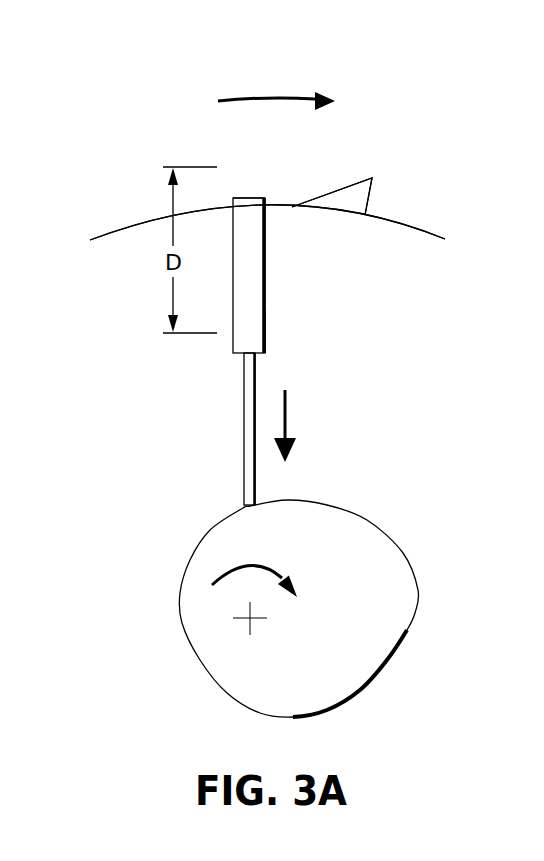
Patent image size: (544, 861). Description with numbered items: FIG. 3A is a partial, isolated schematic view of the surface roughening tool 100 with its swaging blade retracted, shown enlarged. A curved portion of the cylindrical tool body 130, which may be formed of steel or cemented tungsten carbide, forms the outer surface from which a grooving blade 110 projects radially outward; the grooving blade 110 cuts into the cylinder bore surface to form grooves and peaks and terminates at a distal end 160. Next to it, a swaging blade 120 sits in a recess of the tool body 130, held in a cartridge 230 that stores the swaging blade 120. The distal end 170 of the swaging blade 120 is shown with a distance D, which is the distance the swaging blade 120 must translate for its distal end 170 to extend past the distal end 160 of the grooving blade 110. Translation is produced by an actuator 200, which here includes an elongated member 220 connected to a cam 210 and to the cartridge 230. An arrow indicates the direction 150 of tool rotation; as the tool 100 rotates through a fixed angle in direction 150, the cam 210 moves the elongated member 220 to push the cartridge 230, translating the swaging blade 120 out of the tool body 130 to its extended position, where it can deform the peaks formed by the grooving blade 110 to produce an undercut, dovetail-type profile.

The surface roughening tool 100 is at (146, 65).
The grooving blade 110 is at (369, 198).
The swaging blade 120 is at (265, 290).
The tool body 130 is at (127, 227).
The direction 150 is at (296, 96).
The distal end of the grooving blade 160 is at (373, 179).
The distal end of the swaging blade 170 is at (257, 197).
The actuator 200 is at (378, 468).
The cam 210 is at (401, 682).
The elongated member 220 is at (243, 463).
The cartridge 230 is at (265, 323).